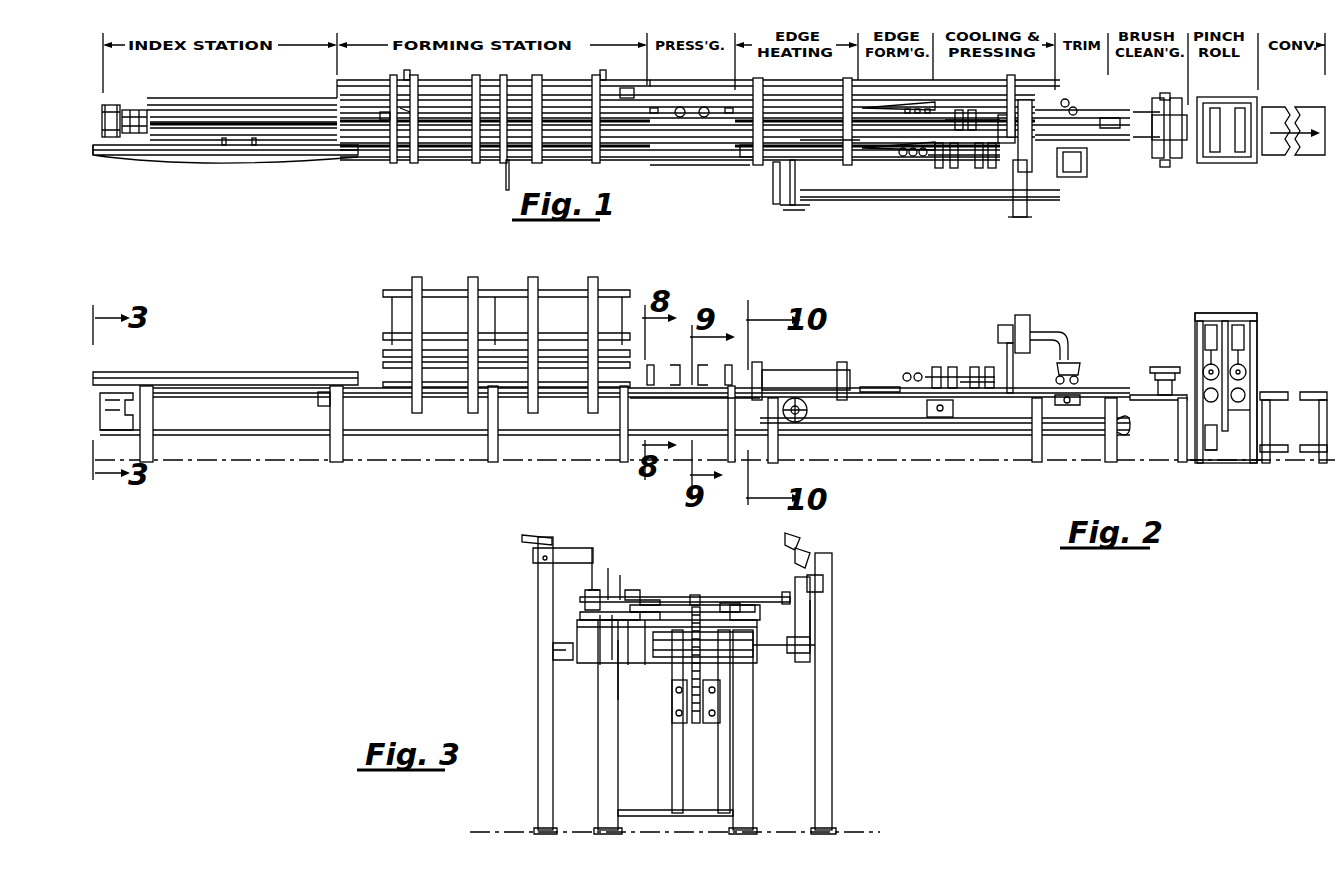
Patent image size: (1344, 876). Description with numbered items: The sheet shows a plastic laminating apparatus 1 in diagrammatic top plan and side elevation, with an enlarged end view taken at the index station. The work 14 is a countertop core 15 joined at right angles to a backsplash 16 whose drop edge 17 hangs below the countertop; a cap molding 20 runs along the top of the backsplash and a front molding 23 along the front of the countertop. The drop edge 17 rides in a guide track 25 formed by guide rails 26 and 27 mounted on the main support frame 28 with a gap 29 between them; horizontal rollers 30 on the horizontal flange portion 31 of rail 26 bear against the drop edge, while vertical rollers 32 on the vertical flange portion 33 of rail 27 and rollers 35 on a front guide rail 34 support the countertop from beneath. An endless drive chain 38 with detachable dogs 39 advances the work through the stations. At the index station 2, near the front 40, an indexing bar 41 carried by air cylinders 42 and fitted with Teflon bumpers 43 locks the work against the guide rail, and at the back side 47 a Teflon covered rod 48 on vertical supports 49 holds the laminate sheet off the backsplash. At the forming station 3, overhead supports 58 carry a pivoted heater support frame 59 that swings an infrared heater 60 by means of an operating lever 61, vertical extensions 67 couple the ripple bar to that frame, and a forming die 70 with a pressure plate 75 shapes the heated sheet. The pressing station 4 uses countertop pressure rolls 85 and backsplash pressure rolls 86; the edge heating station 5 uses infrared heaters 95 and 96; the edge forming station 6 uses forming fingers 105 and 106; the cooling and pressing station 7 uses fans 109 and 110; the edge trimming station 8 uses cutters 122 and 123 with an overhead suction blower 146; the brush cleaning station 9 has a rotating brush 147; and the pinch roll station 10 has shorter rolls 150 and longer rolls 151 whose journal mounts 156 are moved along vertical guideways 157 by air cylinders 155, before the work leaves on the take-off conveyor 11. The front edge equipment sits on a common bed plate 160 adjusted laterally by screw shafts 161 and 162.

In FIG. 1, the apparatus 1 is at (692, 158).
In FIG. 2, the apparatus 1 is at (857, 355).
In FIG. 3, the apparatus 1 is at (838, 670).
In FIG. 1, the index station 2 is at (214, 158).
In FIG. 2, the index station 2 is at (200, 370).
In FIG. 3, the index station 2 is at (607, 537).
In FIG. 1, the forming station 3 is at (441, 158).
In FIG. 2, the forming station 3 is at (489, 283).
In FIG. 1, the pressing station 4 is at (669, 158).
In FIG. 2, the pressing station 4 is at (684, 305).
In FIG. 1, the edge heating station 5 is at (753, 158).
In FIG. 1, the edge forming station 6 is at (909, 155).
In FIG. 2, the edge forming station 6 is at (879, 383).
In FIG. 1, the cooling and pressing station 7 is at (983, 165).
In FIG. 2, the cooling and pressing station 7 is at (973, 365).
In FIG. 1, the edge trimming station 8 is at (1085, 175).
In FIG. 2, the edge trimming station 8 is at (1061, 323).
In FIG. 1, the brush cleaning station 9 is at (1134, 150).
In FIG. 2, the brush cleaning station 9 is at (1141, 371).
In FIG. 1, the pinch roll station 10 is at (1220, 163).
In FIG. 2, the pinch roll station 10 is at (1225, 323).
In FIG. 1, the take-off conveyor 11 is at (1277, 155).
In FIG. 2, the take-off conveyor 11 is at (1310, 393).
In FIG. 3, the work 14 is at (723, 600).
In FIG. 3, the countertop core 15 is at (738, 597).
In FIG. 3, the backsplash 16 is at (630, 592).
In FIG. 3, the drop edge 17 is at (618, 660).
In FIG. 3, the cap molding 20 is at (632, 578).
In FIG. 3, the front molding 23 is at (783, 595).
In FIG. 1, the guide track 25 is at (316, 99).
In FIG. 3, the guide track 25 is at (590, 607).
In FIG. 3, the guide rail 26 is at (618, 622).
In FIG. 3, the guide rail 27 is at (630, 620).
In FIG. 2, the main support frame 28 is at (243, 396).
In FIG. 3, the main support frame 28 is at (585, 697).
In FIG. 3, the gap 29 is at (645, 600).
In FIG. 3, the rollers 30 is at (595, 598).
In FIG. 3, the horizontal flange portion 31 is at (613, 620).
In FIG. 3, the rollers 32 is at (632, 612).
In FIG. 3, the vertical flange portion 33 is at (650, 625).
In FIG. 3, the guide rail 34 is at (755, 652).
In FIG. 3, the rollers 35 is at (755, 610).
In FIG. 1, the endless drive chain 38 is at (160, 118).
In FIG. 2, the endless drive chain 38 is at (1128, 429).
In FIG. 3, the endless drive chain 38 is at (700, 725).
In FIG. 3, the detachable dogs 39 is at (697, 605).
In FIG. 3, the front 40 is at (815, 606).
In FIG. 1, the indexing bar 41 is at (252, 156).
In FIG. 2, the indexing bar 41 is at (277, 374).
In FIG. 3, the indexing bar 41 is at (825, 578).
In FIG. 1, the air cylinders 42 is at (115, 108).
In FIG. 2, the air cylinders 42 is at (108, 400).
In FIG. 3, the air cylinders 42 is at (725, 655).
In FIG. 3, the Teflon bumpers 43 is at (810, 618).
In FIG. 3, the back side 47 is at (578, 632).
In FIG. 3, the Teflon covered rod 48 is at (612, 580).
In FIG. 3, the vertical supports 49 is at (598, 575).
In FIG. 1, the overhead supports 58 is at (474, 106).
In FIG. 1, the heater support frame 59 is at (388, 96).
In FIG. 1, the infrared heater 60 is at (512, 86).
In FIG. 1, the operating lever 61 is at (507, 172).
In FIG. 1, the vertical extensions 67 is at (411, 70).
In FIG. 1, the forming die 70 is at (388, 118).
In FIG. 1, the pressure plate 75 is at (403, 112).
In FIG. 1, the countertop pressure rolls 85 is at (655, 107).
In FIG. 2, the countertop pressure rolls 85 is at (649, 378).
In FIG. 1, the backsplash pressure rolls 86 is at (703, 106).
In FIG. 2, the backsplash pressure rolls 86 is at (670, 380).
In FIG. 1, the infrared heater 95 is at (788, 102).
In FIG. 1, the infrared heater 96 is at (818, 143).
In FIG. 2, the infrared heater 96 is at (804, 365).
In FIG. 1, the forming finger 105 is at (872, 152).
In FIG. 1, the forming finger 106 is at (870, 108).
In FIG. 1, the fans 109 is at (932, 152).
In FIG. 2, the fans 109 is at (970, 386).
In FIG. 1, the fans 110 is at (970, 108).
In FIG. 2, the fans 110 is at (960, 370).
In FIG. 1, the front edge cutter 122 is at (1065, 177).
In FIG. 2, the front edge cutter 122 is at (1065, 413).
In FIG. 1, the cutter 123 is at (1074, 102).
In FIG. 2, the suction blower 146 is at (1075, 365).
In FIG. 1, the rotating brush 147 is at (1178, 153).
In FIG. 2, the rotating brush 147 is at (1160, 371).
In FIG. 1, the rolls 150 is at (1250, 118).
In FIG. 2, the rolls 150 is at (1248, 386).
In FIG. 1, the rolls 151 is at (1215, 115).
In FIG. 2, the rolls 151 is at (1197, 398).
In FIG. 2, the air cylinders 155 is at (1202, 362).
In FIG. 2, the journal mounts 156 is at (1203, 366).
In FIG. 2, the vertical guideways 157 is at (1236, 335).
In FIG. 1, the bed plate 160 is at (803, 156).
In FIG. 1, the screw shaft 161 is at (795, 172).
In FIG. 1, the screw shaft 162 is at (1015, 205).